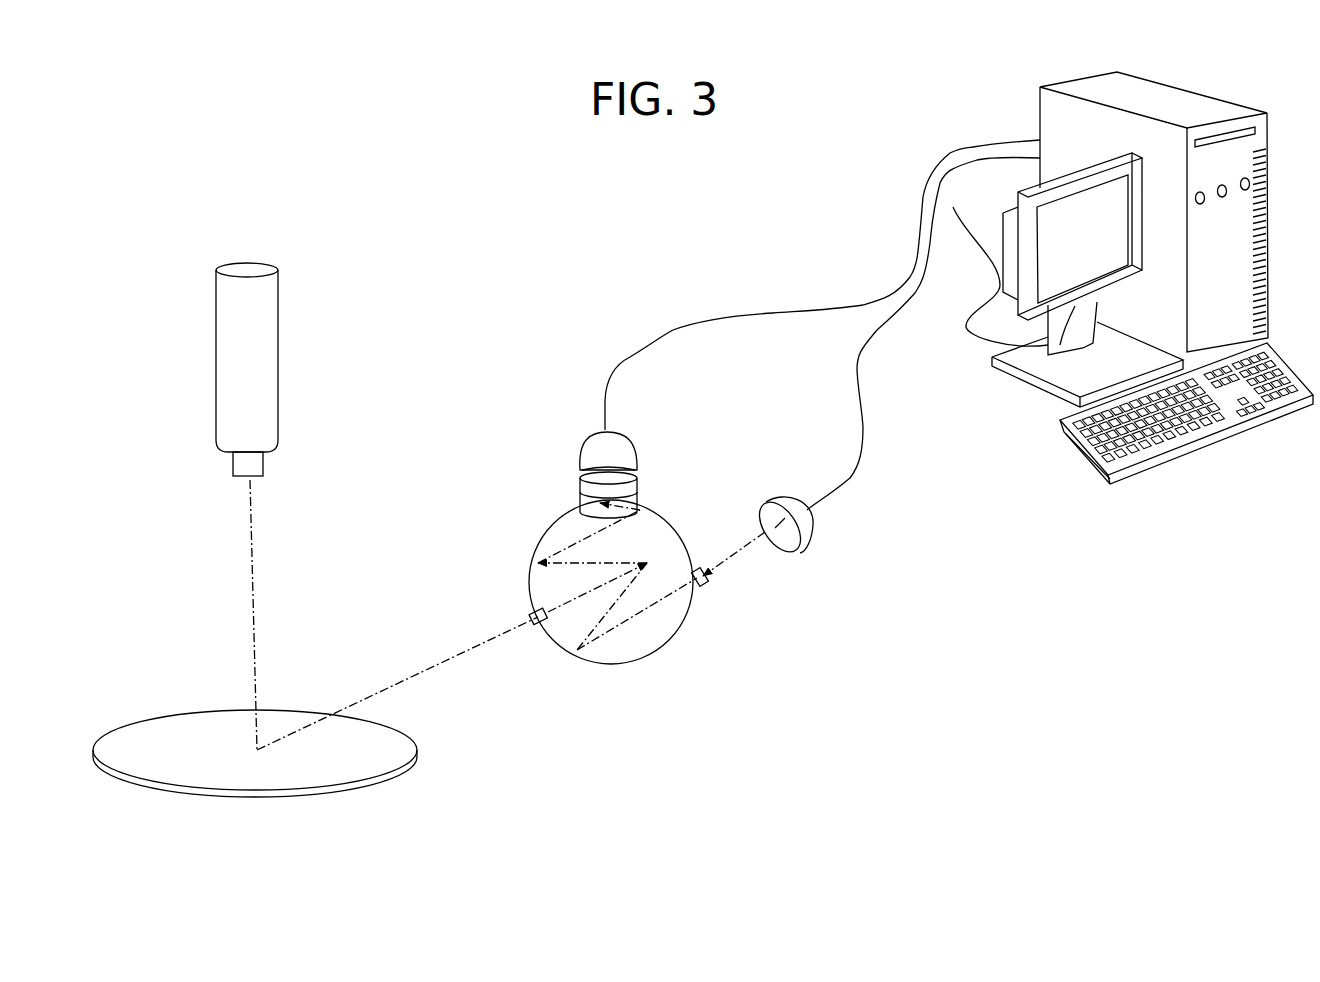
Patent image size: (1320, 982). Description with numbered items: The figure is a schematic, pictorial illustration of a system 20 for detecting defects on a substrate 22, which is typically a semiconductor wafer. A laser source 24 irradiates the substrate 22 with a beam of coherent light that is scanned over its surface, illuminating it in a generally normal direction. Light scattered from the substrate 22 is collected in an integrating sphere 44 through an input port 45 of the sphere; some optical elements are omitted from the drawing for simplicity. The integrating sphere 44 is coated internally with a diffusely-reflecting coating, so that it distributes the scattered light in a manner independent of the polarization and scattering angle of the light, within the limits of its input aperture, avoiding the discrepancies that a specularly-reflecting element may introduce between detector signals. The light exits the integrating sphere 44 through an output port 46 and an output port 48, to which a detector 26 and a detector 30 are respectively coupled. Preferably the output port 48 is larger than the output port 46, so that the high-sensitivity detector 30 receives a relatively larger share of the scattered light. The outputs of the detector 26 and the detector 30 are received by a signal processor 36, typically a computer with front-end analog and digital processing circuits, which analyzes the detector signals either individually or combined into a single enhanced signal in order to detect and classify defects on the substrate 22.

The system 20 is at (328, 156).
The substrate 22 is at (383, 765).
The laser source 24 is at (267, 343).
The detector 26 is at (808, 525).
The detector 30 is at (592, 445).
The signal processor 36 is at (1267, 212).
The integrating sphere 44 is at (533, 543).
The input port 45 is at (535, 628).
The output port 46 is at (703, 587).
The output port 48 is at (640, 496).